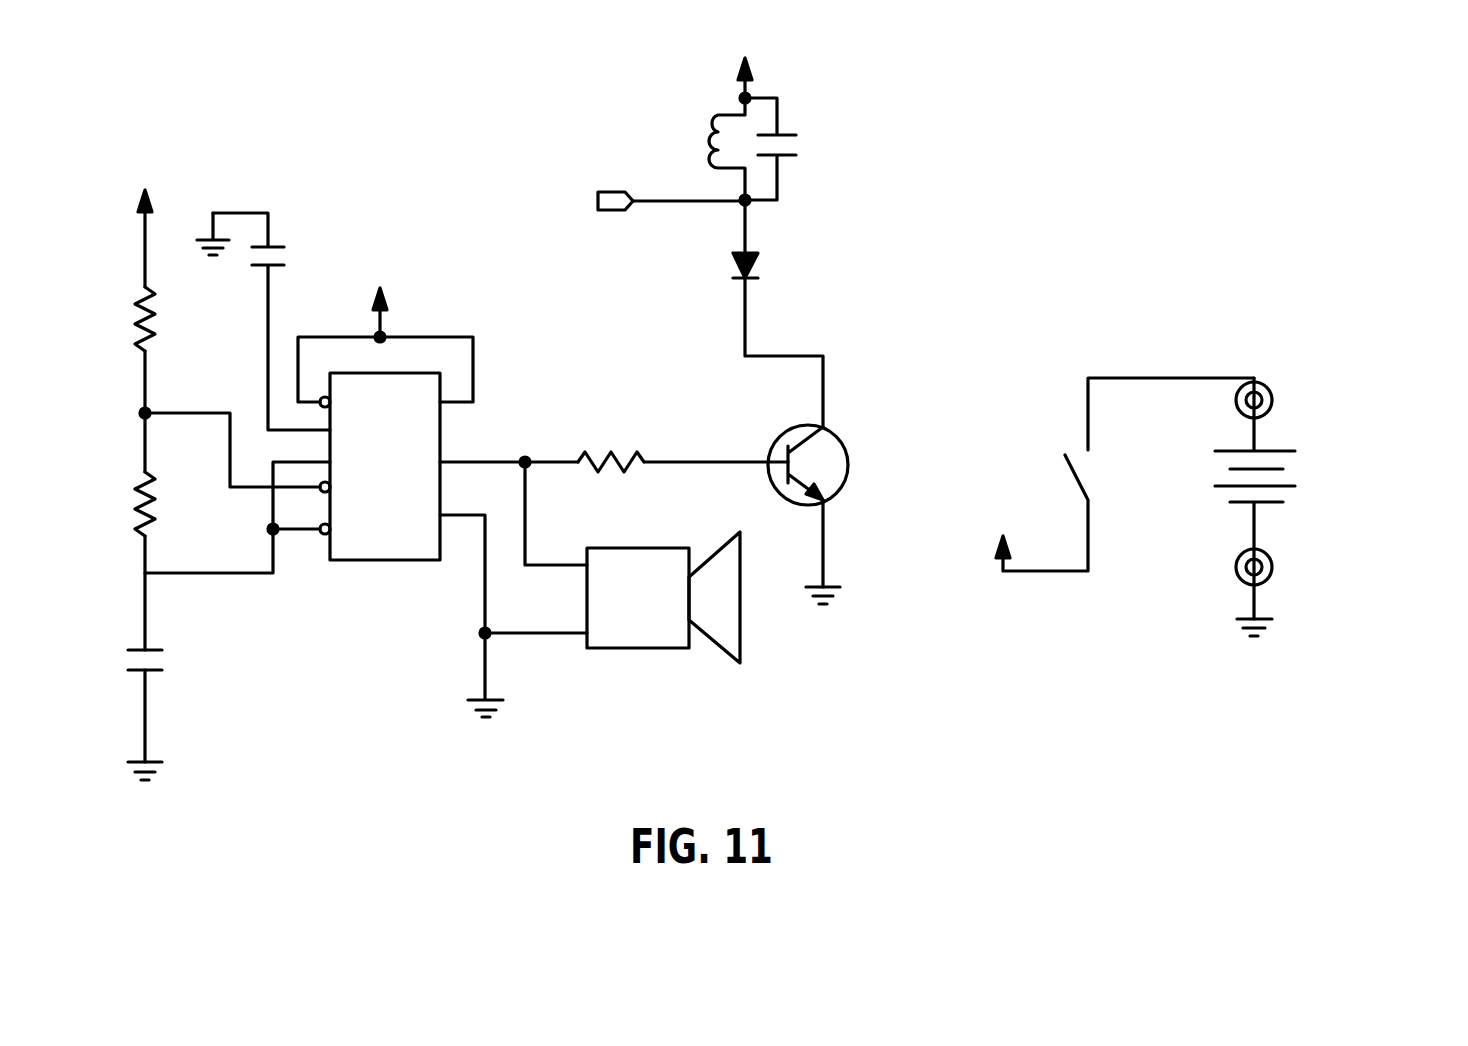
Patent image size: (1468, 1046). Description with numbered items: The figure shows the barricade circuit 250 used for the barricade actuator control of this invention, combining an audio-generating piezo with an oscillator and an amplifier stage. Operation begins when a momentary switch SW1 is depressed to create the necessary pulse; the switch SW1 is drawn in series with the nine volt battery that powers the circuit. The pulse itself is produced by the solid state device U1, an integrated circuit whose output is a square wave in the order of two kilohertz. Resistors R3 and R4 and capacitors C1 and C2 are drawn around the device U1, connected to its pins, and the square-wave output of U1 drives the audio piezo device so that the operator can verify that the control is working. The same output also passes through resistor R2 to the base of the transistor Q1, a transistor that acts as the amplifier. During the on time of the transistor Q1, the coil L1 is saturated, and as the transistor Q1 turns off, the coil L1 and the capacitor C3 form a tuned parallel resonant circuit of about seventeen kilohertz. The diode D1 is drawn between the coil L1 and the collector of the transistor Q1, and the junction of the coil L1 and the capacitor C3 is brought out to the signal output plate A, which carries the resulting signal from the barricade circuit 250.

The barricade circuit 250 is at (797, 416).
The resistor 4.7K R2 is at (619, 461).
The resistor 4.7K R3 is at (190, 319).
The resistor 4.7K R4 is at (190, 504).
The capacitor .1u C1 is at (268, 321).
The capacitor .1u C2 is at (173, 664).
The capacitor C3 is at (812, 149).
The coil L1 is at (618, 126).
The diode D1 is at (724, 267).
The transistor Q1 is at (860, 464).
The solid state device U1 is at (385, 445).
The switch SW1 is at (1125, 474).
The signal output plate A is at (576, 203).